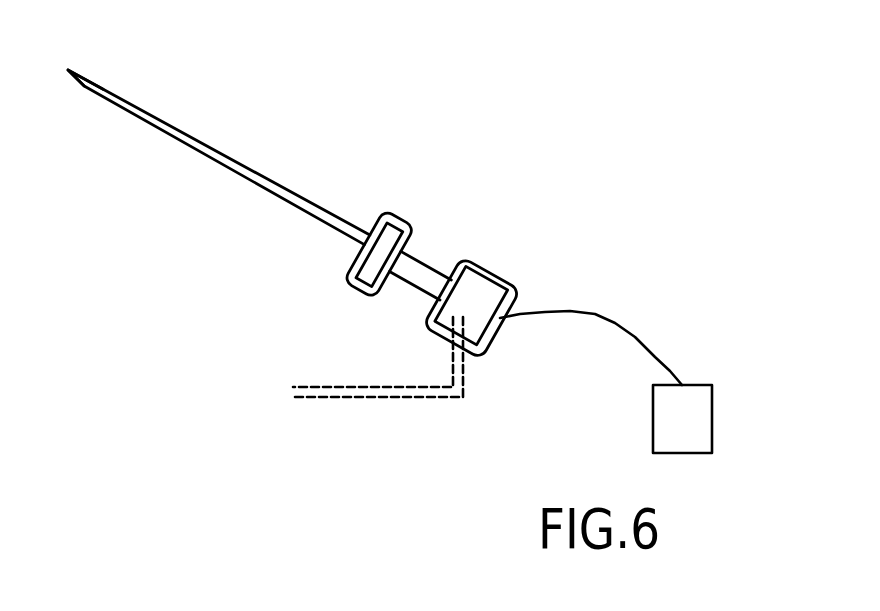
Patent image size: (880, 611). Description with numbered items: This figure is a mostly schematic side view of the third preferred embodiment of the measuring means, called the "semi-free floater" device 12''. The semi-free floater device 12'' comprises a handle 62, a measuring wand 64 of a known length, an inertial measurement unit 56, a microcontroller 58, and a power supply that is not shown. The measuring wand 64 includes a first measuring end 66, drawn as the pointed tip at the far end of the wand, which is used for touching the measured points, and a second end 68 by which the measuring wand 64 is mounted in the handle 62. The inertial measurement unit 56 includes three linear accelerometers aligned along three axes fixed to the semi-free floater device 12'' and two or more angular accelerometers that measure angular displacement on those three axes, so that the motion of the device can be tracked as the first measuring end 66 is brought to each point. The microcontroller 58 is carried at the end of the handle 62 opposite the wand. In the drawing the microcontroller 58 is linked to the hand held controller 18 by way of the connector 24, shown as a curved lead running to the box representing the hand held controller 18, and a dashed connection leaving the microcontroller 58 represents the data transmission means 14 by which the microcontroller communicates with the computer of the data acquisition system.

The first measuring end 66 is at (64, 65).
The measuring wand 64 is at (217, 175).
The second end 68 is at (347, 255).
The inertial measurement unit 56 is at (385, 246).
The handle 62 is at (430, 267).
The microcontroller 58 is at (480, 295).
The data transmission means 14 is at (352, 398).
The connector 24 is at (598, 322).
The hand held controller 18 is at (712, 435).
The semi-free floater device 12'' is at (454, 77).